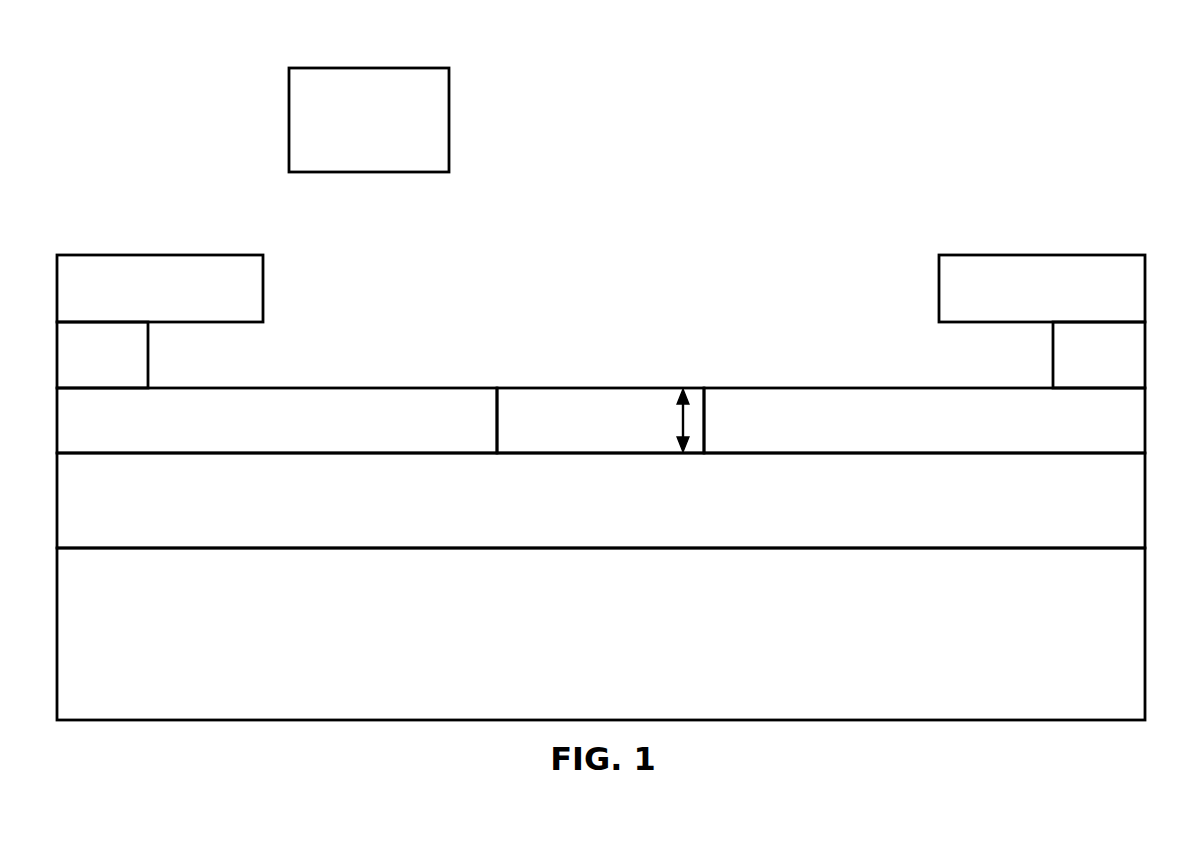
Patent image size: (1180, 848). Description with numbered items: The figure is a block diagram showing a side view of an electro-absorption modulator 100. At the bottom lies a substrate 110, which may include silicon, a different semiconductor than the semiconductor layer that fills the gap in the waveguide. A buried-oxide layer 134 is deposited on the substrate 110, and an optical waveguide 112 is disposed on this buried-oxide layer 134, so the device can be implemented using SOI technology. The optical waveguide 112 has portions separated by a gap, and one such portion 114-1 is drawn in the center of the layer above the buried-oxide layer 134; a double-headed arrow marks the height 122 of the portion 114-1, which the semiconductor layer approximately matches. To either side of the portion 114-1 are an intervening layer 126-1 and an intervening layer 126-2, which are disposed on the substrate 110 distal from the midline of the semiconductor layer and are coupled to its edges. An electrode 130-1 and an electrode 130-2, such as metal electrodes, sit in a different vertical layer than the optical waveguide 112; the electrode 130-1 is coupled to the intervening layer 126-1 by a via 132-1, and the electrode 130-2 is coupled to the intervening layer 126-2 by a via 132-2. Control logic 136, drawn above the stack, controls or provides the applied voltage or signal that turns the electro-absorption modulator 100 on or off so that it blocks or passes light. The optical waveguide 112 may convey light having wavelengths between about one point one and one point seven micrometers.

The electro-absorption modulator 100 is at (888, 103).
The substrate 110 is at (583, 657).
The optical waveguide 112 is at (626, 376).
The portion of optical waveguide 114-1 is at (571, 443).
The height 122 is at (683, 418).
The intervening layer 126-1 is at (248, 443).
The intervening layer 126-2 is at (895, 443).
The electrode 130-1 is at (131, 311).
The electrode 130-2 is at (1013, 311).
The via 132-1 is at (74, 376).
The via 132-2 is at (1070, 376).
The buried-oxide layer 134 is at (583, 522).
The control logic 136 is at (350, 156).